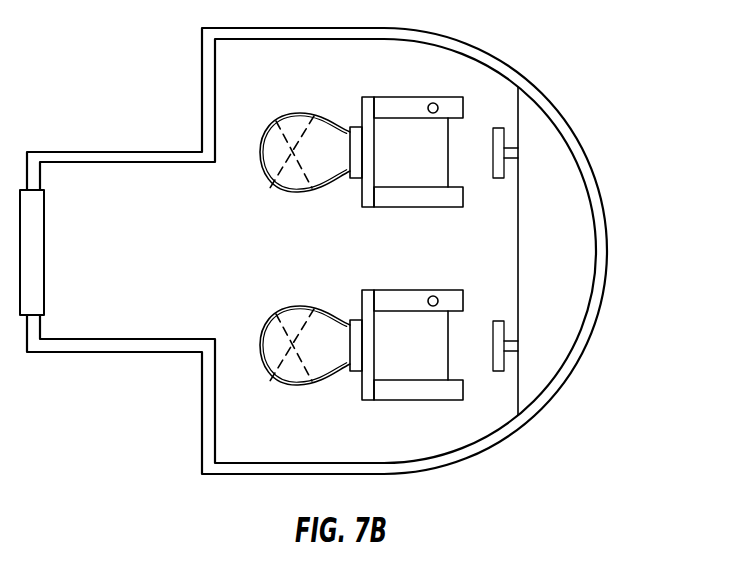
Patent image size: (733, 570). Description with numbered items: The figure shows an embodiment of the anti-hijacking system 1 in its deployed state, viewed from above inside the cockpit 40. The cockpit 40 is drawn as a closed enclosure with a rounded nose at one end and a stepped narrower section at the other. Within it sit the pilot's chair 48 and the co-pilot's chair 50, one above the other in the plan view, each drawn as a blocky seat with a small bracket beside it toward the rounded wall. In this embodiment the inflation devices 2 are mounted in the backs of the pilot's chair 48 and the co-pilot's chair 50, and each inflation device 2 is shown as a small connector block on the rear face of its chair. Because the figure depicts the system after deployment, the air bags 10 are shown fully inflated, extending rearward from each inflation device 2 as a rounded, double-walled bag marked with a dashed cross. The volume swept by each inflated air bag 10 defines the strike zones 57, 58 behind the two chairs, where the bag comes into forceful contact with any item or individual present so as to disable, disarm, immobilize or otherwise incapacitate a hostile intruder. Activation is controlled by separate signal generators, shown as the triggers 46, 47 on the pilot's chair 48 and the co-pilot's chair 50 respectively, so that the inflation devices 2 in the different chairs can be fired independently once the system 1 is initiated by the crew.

The anti-hijacking system 1 is at (552, 41).
The inflation device 2 is at (356, 127).
The air bag 10 is at (335, 164).
The cockpit 40 is at (332, 256).
The trigger 46 is at (433, 296).
The trigger 47 is at (433, 103).
The pilot's chair 48 is at (427, 359).
The co-pilot's chair 50 is at (427, 166).
The strike zone 57 is at (269, 106).
The strike zone 58 is at (269, 299).